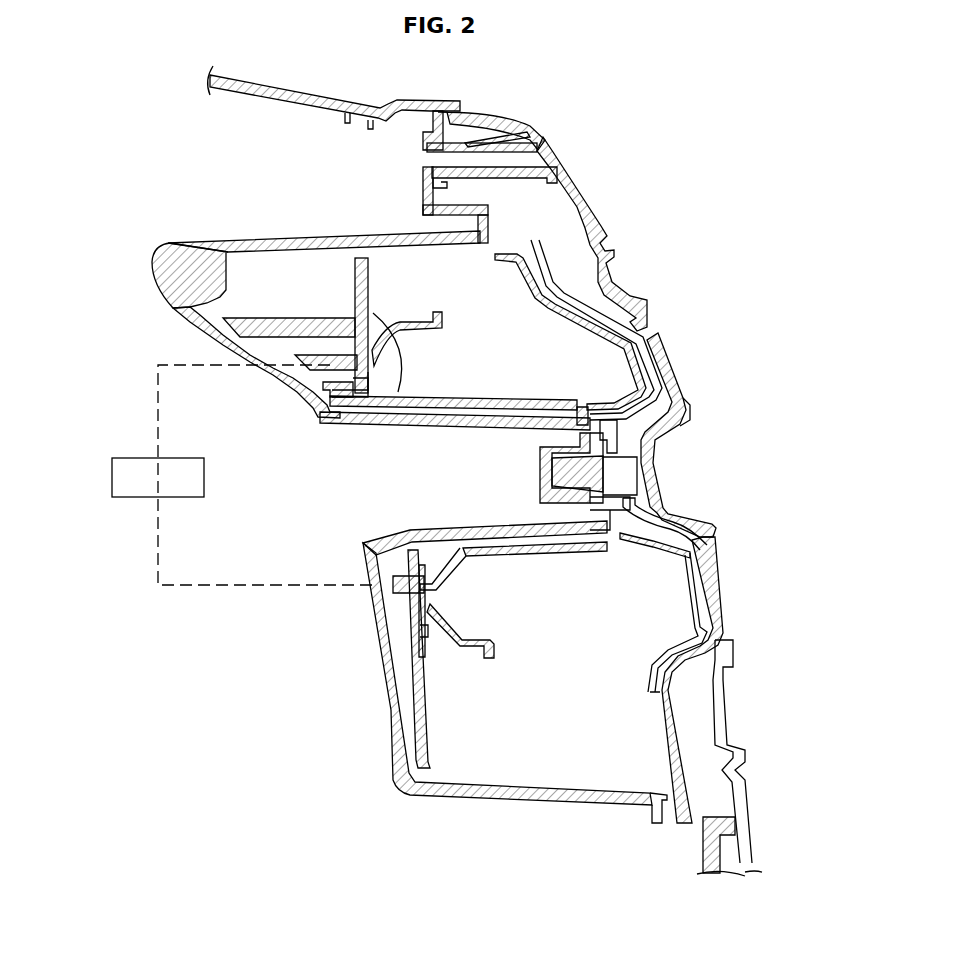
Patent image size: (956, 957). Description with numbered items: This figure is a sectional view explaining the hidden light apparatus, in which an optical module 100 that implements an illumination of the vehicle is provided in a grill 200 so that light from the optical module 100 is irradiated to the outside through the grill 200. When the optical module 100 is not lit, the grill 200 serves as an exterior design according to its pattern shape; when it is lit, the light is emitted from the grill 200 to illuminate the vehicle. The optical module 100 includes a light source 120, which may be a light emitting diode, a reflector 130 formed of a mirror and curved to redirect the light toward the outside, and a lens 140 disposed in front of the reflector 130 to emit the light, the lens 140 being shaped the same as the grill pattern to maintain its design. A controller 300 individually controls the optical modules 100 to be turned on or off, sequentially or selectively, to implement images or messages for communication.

The optical module 100 is at (162, 314).
The light source 120 is at (343, 396).
The reflector 130 is at (478, 550).
The lens 140 is at (655, 366).
The grill 200 is at (620, 231).
The controller 300 is at (133, 490).